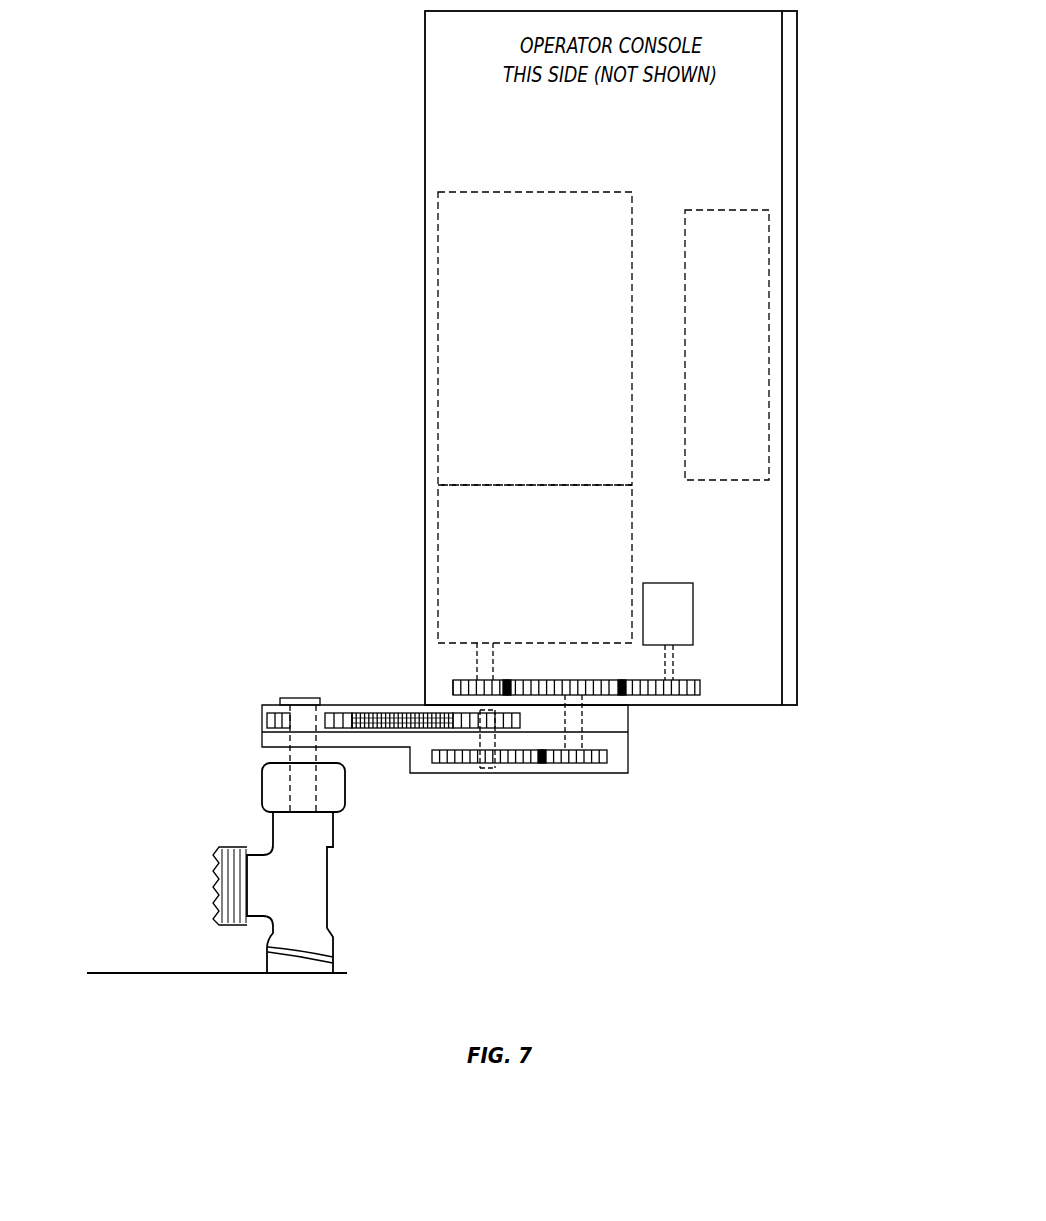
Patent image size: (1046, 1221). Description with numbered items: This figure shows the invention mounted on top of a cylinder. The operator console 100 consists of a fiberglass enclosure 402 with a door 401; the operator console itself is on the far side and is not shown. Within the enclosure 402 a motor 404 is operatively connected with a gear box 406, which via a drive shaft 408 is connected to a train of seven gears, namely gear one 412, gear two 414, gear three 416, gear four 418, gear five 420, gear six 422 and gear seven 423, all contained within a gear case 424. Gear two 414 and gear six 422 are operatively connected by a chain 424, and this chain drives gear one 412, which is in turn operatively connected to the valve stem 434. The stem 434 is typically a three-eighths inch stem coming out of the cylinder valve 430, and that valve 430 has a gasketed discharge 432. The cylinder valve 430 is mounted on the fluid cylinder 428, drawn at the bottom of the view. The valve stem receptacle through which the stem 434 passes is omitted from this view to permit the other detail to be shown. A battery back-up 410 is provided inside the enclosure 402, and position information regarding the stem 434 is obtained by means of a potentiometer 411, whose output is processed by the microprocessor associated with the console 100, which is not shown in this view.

The operator console 100 is at (832, 72).
The door 401 is at (797, 505).
The fiberglass enclosure 402 is at (422, 310).
The motor 404 is at (550, 376).
The gear box 406 is at (553, 586).
The drive shaft 408 is at (480, 660).
The battery back-up 410 is at (745, 376).
The potentiometer 411 is at (670, 583).
The gear 1 412 is at (270, 713).
The gear 2 414 is at (470, 715).
The gear 3 416 is at (510, 762).
The gear 4 418 is at (585, 763).
The gear 5 420 is at (617, 695).
The gear 6 422 is at (465, 682).
The gear 7 423 is at (700, 689).
The gear case / chain 424 is at (700, 772).
The fluid cylinder 428 is at (230, 973).
The cylinder valve 430 is at (327, 933).
The gasketed discharge 432 is at (217, 870).
The valve stem 434 is at (293, 737).